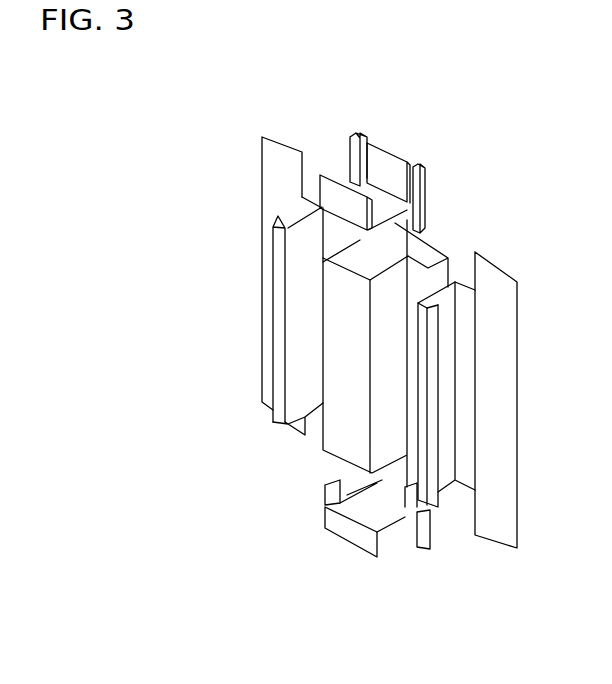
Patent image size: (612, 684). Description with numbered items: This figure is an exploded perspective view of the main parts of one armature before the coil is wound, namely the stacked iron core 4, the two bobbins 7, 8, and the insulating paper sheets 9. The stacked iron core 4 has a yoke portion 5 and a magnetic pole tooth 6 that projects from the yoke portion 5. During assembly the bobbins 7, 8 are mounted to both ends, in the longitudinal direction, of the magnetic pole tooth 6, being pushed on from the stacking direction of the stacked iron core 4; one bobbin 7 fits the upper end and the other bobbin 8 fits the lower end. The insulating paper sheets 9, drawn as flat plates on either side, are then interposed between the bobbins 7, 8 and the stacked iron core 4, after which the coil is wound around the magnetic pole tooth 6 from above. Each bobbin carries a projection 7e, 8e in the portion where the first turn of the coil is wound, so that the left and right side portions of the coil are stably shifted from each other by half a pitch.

The stacked iron core 4 is at (367, 267).
The yoke portion 5 is at (430, 265).
The magnetic pole tooth 6 is at (355, 355).
The bobbin 7 is at (391, 159).
The projection 7e is at (410, 203).
The bobbin 8 is at (371, 549).
The projection 8e is at (410, 512).
The insulating paper sheet 9 is at (272, 158).